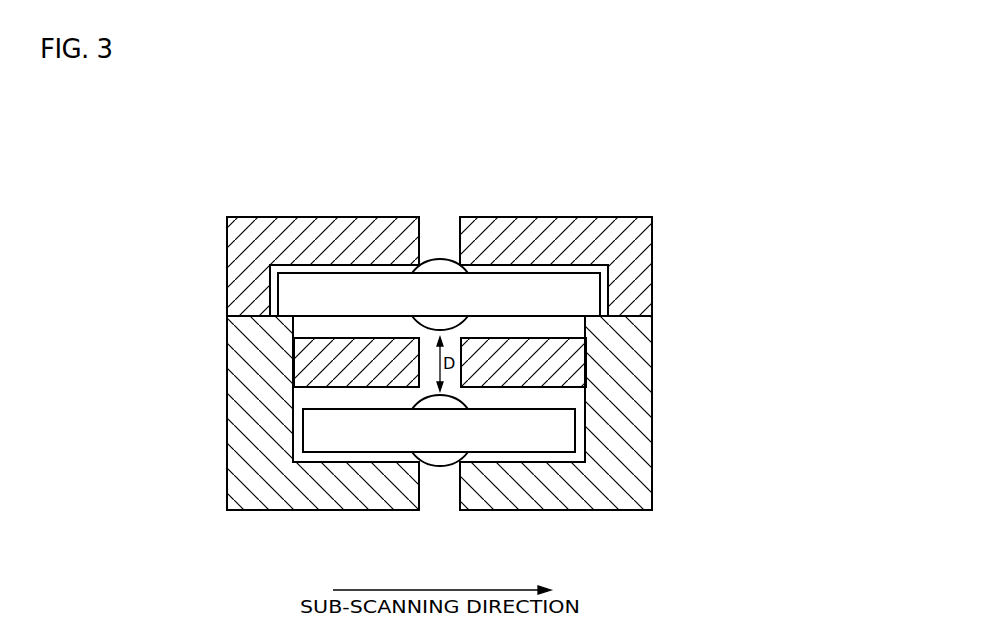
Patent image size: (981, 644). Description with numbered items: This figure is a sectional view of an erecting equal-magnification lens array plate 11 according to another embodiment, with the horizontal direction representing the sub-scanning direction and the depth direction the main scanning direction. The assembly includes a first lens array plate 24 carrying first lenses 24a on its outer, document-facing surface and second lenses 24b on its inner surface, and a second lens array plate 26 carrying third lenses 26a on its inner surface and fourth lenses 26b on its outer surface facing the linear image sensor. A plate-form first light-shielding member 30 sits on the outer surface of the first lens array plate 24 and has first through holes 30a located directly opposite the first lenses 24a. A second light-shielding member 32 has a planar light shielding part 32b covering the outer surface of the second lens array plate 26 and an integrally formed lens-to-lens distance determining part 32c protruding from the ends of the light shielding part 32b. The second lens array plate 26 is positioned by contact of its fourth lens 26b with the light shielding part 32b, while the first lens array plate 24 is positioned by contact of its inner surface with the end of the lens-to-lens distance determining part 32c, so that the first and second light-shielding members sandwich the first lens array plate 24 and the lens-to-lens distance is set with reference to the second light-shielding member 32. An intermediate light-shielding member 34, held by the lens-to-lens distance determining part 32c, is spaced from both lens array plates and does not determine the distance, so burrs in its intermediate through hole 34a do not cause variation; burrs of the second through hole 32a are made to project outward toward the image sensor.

The erecting equal-magnification lens array plate 11 is at (593, 175).
The first lens array plate 24 is at (587, 293).
The first lens 24a is at (433, 258).
The second lens 24b is at (382, 325).
The second lens array plate 26 is at (558, 428).
The third lens 26a is at (463, 403).
The fourth lens 26b is at (440, 468).
The first light-shielding member 30 is at (653, 253).
The first through hole 30a is at (459, 238).
The second light-shielding member 32 is at (657, 463).
The second through hole 32a is at (461, 490).
The light shielding part 32b is at (560, 484).
The lens-to-lens distance determining part 32c is at (620, 353).
The intermediate light-shielding member 34 is at (321, 360).
The intermediate through hole 34a is at (420, 368).